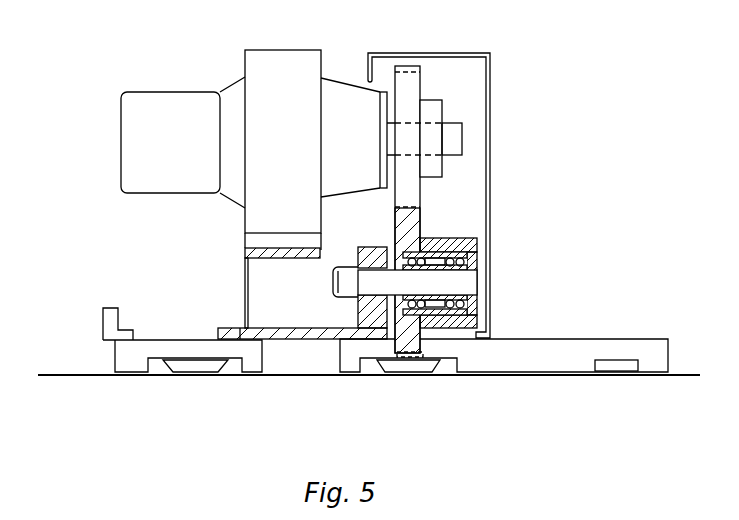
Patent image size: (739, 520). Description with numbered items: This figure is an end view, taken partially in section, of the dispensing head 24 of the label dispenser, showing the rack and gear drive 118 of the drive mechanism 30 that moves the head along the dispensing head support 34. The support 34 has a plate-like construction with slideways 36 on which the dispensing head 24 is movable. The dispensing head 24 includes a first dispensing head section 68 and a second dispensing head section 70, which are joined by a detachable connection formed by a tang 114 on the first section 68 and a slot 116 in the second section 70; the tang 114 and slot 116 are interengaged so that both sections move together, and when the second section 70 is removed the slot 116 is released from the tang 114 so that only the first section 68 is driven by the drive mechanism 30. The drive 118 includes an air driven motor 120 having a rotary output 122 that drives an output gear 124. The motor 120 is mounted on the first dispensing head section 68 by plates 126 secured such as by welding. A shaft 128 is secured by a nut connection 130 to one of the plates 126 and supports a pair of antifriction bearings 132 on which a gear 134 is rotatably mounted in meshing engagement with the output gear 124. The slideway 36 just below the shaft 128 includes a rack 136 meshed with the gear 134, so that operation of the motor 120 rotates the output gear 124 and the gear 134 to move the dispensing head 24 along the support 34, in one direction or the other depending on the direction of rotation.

The drive mechanism 30 is at (540, 139).
The dispensing head 24 is at (568, 333).
The dispensing head support 34 is at (89, 370).
The slideways 36 is at (183, 368).
The first dispensing head section 68 is at (619, 334).
The second dispensing head section 70 is at (191, 346).
The tang 114 is at (257, 327).
The slot 116 is at (237, 327).
The rack and gear drive 118 is at (359, 49).
The motor 120 is at (335, 83).
The rotary output 122 is at (458, 133).
The output gear 124 is at (417, 195).
The plates 126 is at (365, 257).
The shaft 128 is at (470, 283).
The nut connection 130 is at (345, 298).
The antifriction bearings 132 is at (430, 240).
The gear 134 is at (417, 225).
The rack 136 is at (405, 357).